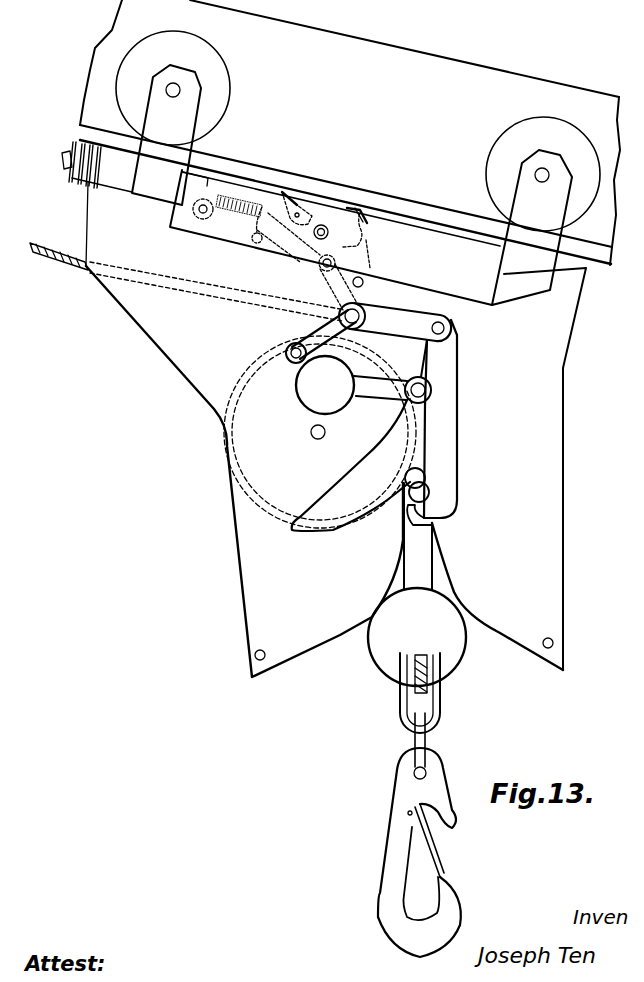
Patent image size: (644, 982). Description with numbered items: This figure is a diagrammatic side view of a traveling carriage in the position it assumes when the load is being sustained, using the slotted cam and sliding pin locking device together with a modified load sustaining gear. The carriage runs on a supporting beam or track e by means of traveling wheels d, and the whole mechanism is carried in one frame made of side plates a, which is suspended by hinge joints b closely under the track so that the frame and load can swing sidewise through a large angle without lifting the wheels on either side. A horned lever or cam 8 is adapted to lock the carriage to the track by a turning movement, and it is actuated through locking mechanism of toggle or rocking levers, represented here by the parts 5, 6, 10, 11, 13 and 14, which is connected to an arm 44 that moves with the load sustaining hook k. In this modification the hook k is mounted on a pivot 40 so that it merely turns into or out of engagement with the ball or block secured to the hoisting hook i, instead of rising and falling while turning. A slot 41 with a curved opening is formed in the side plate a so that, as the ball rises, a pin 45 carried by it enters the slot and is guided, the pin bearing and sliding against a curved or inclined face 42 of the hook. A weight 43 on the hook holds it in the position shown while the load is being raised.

The traveling wheel d is at (212, 95).
The supporting beam or track e is at (341, 132).
The side plate a is at (534, 579).
The load sustaining hook k is at (440, 412).
The hinge joint b is at (453, 660).
The hoisting hook i is at (444, 874).
The link 5 is at (293, 364).
The link 6 is at (328, 287).
The horned lever or cam 8 is at (343, 247).
The pivot 10 is at (360, 313).
The lever 11 is at (403, 323).
The pivot pin 13 is at (322, 226).
The pin 14 is at (363, 280).
The pivot 40 is at (425, 388).
The slot 41 is at (440, 565).
The curved or inclined face 42 is at (353, 522).
The weight 43 is at (315, 400).
The arm 44 is at (438, 350).
The pin 45 is at (421, 492).